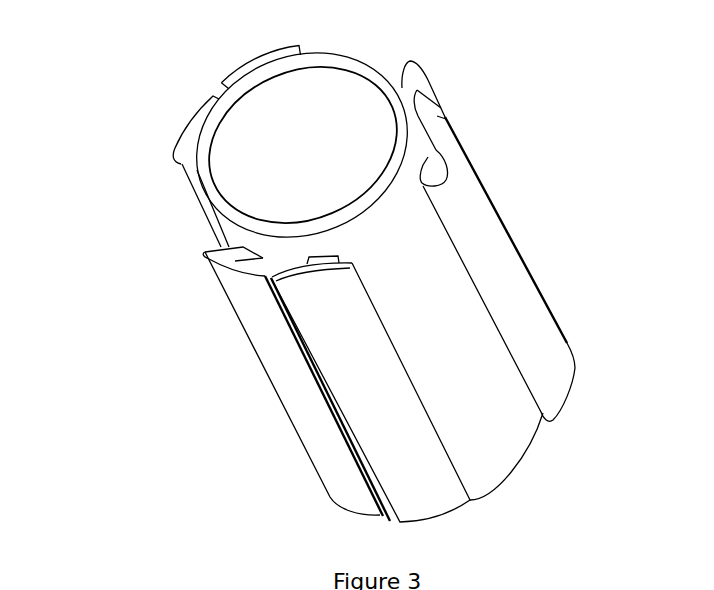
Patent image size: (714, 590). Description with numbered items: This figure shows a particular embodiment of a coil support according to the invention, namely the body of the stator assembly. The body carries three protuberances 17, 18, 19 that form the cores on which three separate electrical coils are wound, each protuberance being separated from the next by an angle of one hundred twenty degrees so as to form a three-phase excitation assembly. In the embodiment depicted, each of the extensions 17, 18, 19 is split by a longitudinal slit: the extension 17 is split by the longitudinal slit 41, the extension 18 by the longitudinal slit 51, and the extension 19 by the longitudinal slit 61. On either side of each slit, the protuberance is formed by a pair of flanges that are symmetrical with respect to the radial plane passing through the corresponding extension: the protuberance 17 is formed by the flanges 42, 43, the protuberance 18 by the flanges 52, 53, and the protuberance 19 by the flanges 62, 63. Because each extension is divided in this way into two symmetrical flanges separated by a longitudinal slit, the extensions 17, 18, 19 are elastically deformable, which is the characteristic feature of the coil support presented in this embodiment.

The protuberance 17 is at (228, 140).
The protuberance 18 is at (331, 393).
The protuberance 19 is at (538, 271).
The longitudinal slit 41 is at (320, 449).
The flange 42 is at (377, 503).
The flange 43 is at (413, 490).
The longitudinal slit 51 is at (455, 120).
The flange 52 is at (493, 253).
The flange 53 is at (430, 88).
The longitudinal slit 61 is at (218, 86).
The flange 62 is at (292, 47).
The flange 63 is at (180, 163).